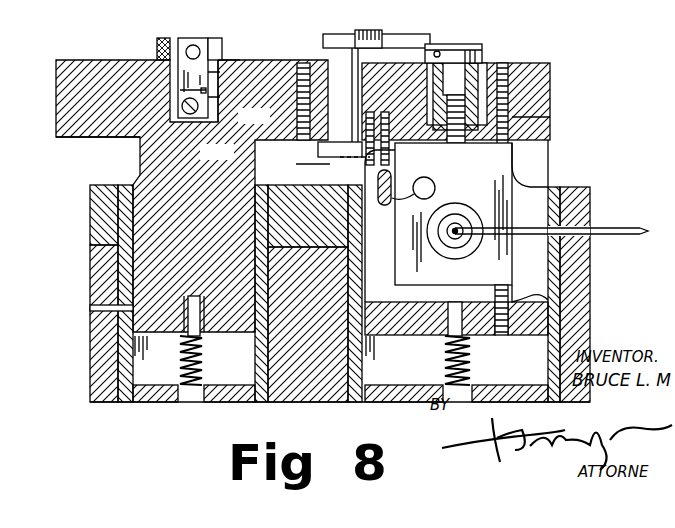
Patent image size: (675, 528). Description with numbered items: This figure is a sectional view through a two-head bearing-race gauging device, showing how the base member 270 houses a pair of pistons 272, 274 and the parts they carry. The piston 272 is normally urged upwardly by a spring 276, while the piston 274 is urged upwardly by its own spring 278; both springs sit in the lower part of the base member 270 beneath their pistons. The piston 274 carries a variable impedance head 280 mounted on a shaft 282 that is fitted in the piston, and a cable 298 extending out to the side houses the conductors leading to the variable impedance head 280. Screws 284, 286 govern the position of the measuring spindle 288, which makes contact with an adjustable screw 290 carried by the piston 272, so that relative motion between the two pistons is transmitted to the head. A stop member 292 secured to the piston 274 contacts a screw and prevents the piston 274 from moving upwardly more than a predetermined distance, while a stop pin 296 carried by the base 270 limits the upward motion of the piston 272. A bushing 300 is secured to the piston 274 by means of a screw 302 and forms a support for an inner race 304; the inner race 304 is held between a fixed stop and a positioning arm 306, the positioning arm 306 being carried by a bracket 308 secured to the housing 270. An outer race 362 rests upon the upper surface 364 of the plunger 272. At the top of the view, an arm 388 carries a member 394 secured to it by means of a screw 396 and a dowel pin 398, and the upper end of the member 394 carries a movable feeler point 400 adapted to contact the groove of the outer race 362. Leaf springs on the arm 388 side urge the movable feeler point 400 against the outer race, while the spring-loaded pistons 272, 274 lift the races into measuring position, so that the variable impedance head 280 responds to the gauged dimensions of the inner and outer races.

The base member 270 is at (590, 338).
The piston 272 is at (68, 140).
The piston 274 is at (552, 106).
The spring 276 is at (182, 404).
The spring 278 is at (474, 372).
The variable impedance head 280 is at (548, 170).
The shaft 282 is at (400, 200).
The screw 284 is at (552, 118).
The screw 286 is at (540, 296).
The measuring spindle 288 is at (316, 154).
The adjustable screw 290 is at (304, 62).
The stop member 292 is at (330, 176).
The stop pin 296 is at (90, 310).
The cable 298 is at (616, 228).
The bushing 300 is at (490, 63).
The screw 302 is at (450, 150).
The inner race 304 is at (474, 46).
The positioning arm 306 is at (388, 48).
The bracket 308 is at (345, 32).
The outer race 362 is at (157, 44).
The upper surface 364 is at (74, 60).
The arm 388 is at (220, 110).
The member 394 is at (222, 52).
The screw 396 is at (194, 114).
The dowel pin 398 is at (245, 70).
The movable feeler point 400 is at (200, 42).